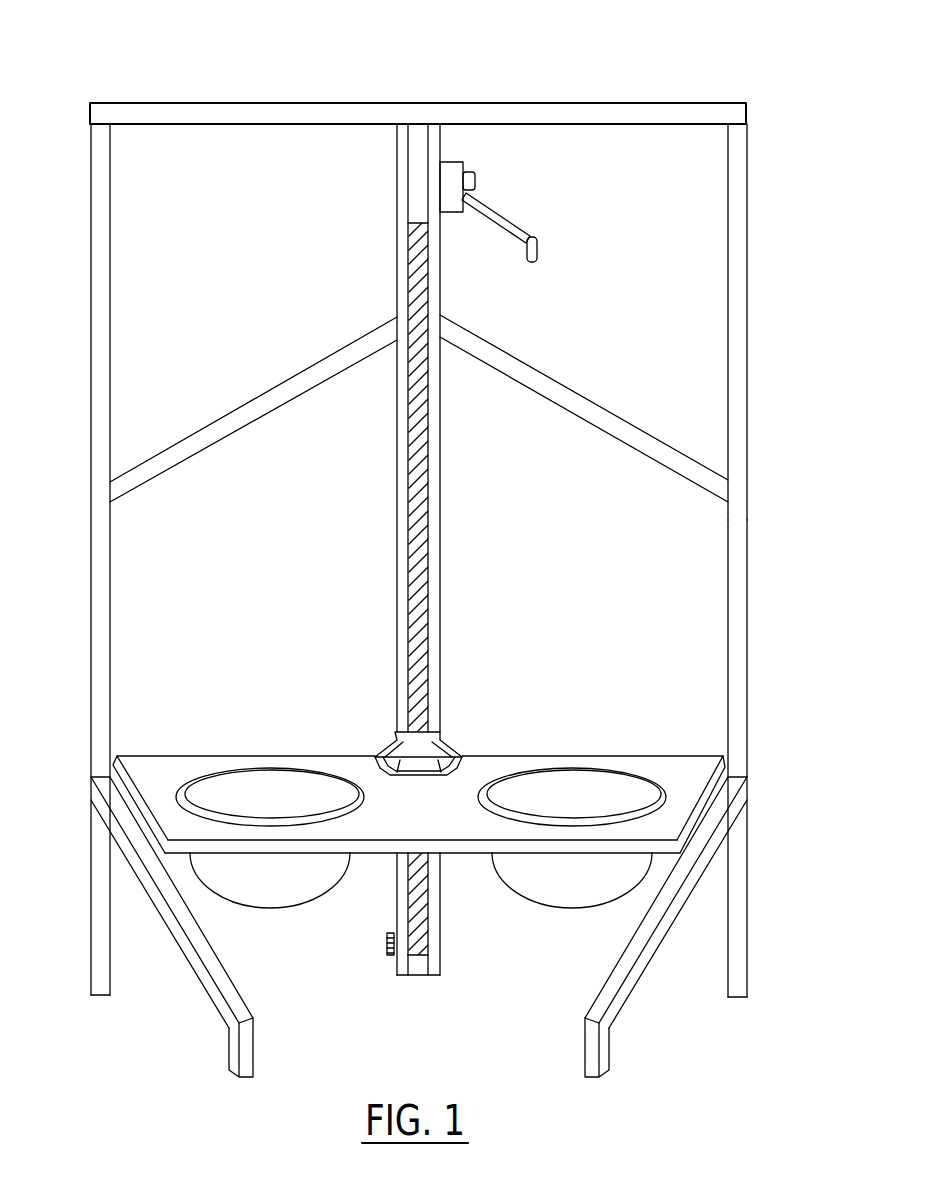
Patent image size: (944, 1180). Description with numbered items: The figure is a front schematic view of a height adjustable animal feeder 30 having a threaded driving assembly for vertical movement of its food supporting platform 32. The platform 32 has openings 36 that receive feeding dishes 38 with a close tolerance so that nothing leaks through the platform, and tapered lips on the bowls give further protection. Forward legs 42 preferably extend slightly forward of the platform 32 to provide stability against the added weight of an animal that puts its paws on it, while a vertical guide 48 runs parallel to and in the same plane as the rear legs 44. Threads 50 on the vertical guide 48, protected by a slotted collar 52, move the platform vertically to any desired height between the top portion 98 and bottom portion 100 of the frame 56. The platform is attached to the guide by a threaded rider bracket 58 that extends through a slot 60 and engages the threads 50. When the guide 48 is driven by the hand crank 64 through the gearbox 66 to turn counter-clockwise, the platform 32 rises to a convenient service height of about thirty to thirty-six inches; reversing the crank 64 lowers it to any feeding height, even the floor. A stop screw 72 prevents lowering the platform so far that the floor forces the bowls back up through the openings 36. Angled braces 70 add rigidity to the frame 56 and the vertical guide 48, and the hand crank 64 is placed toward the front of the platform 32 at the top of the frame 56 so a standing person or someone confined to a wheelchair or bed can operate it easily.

The height adjustable animal feeder 30 is at (442, 511).
The food supporting platform 32 is at (680, 760).
The openings 36 is at (196, 772).
The feeding dishes 38 is at (245, 888).
The forward legs 42 is at (215, 1000).
The rear legs 44 is at (95, 973).
The vertical guide 48 is at (398, 571).
The threads 50 is at (423, 549).
The slotted collar 52 is at (438, 955).
The frame 56 is at (477, 501).
The threaded rider bracket 58 is at (445, 752).
The slot 60 is at (426, 968).
The hand crank 64 is at (540, 258).
The gearbox 66 is at (450, 170).
The angled braces 70 is at (257, 400).
The stop screw 72 is at (387, 948).
The top portion 98 is at (757, 152).
The bottom portion 100 is at (745, 918).